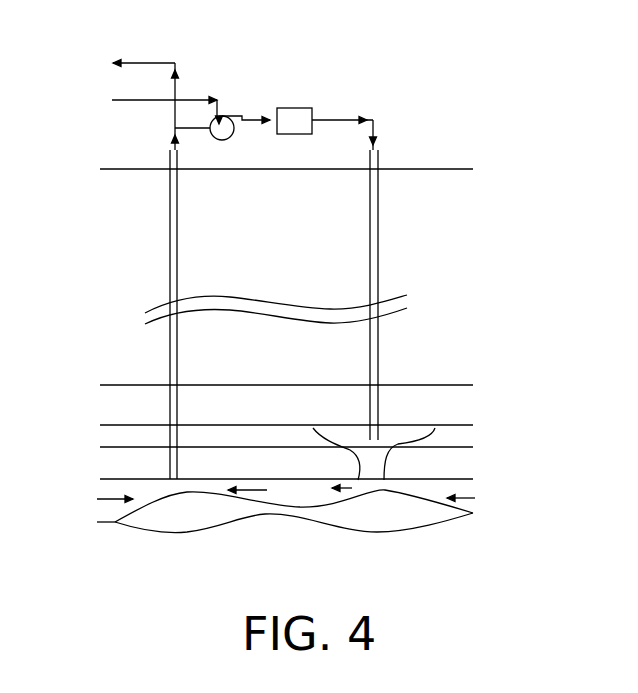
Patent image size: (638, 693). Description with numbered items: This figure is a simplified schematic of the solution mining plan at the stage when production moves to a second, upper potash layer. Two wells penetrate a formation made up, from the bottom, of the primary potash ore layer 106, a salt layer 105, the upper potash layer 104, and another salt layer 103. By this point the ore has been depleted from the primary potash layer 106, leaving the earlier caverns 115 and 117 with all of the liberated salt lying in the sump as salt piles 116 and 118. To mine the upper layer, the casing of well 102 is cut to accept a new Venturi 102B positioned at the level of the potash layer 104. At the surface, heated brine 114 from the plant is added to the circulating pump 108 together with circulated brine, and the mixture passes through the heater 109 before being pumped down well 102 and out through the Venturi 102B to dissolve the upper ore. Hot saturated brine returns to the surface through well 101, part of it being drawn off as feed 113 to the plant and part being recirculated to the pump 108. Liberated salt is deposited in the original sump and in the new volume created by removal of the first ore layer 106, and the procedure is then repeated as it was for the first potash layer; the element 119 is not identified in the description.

The well 101 is at (178, 215).
The well 102 is at (379, 247).
The Venturi 102B is at (400, 435).
The salt layer 103 is at (455, 409).
The potash layer 104 is at (455, 440).
The salt layer 105 is at (455, 470).
The potash ore layer 106 is at (477, 498).
The circulating pump 108 is at (230, 112).
The heater 109 is at (302, 108).
The feed to the plant 113 is at (137, 57).
The heated brine from the plant 114 is at (137, 105).
The cavern 115 is at (317, 490).
The salt pile 116 is at (374, 522).
The potash cavern 117 is at (217, 493).
The salt pile 118 is at (182, 520).
The wellbore cavity 119 is at (372, 445).